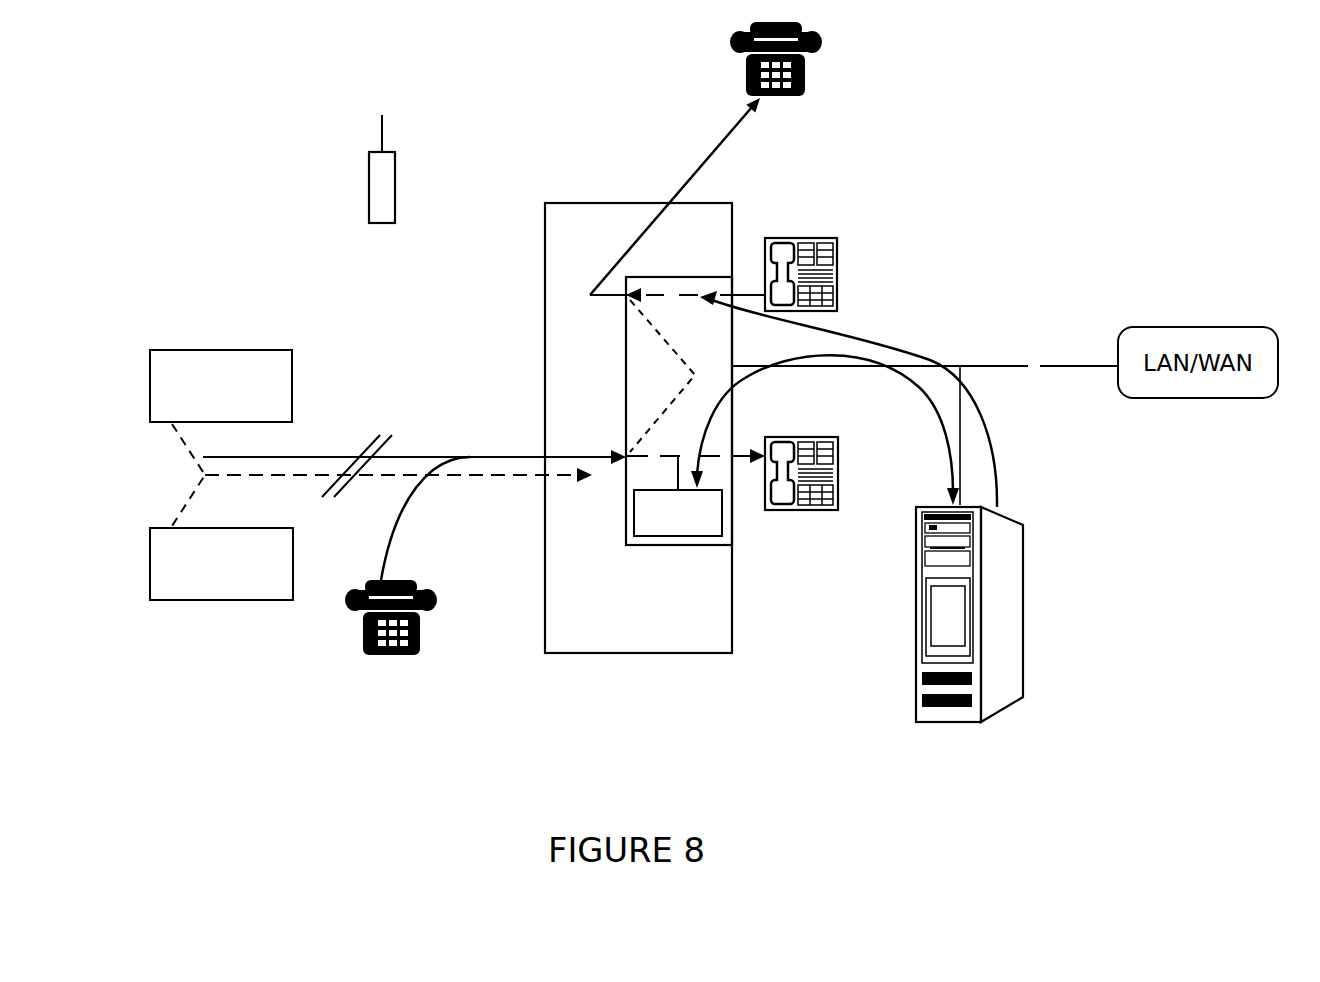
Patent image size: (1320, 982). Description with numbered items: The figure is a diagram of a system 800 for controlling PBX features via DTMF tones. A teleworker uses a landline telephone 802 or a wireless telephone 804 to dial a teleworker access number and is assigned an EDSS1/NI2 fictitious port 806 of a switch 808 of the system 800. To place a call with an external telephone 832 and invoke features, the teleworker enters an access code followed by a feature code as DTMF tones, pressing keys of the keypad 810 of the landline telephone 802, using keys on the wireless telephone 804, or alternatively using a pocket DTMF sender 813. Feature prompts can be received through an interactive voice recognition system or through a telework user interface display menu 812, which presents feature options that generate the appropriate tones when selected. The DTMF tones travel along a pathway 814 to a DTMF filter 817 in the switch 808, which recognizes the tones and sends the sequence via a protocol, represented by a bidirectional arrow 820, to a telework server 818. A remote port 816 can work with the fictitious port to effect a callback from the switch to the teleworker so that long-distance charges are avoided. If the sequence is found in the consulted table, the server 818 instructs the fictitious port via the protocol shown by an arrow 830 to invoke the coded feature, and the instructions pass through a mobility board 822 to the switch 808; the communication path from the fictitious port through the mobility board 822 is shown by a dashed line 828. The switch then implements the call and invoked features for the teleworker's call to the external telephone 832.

The system 800 is at (918, 221).
The landline telephone 802 is at (438, 600).
The wireless telephone 804 is at (397, 163).
The fictitious port 806 is at (742, 292).
The switch 808 is at (608, 379).
The keypad 810 is at (376, 637).
The telework user interface display menu 812 is at (240, 397).
The pocket DTMF sender 813 is at (237, 577).
The pathway 814 is at (503, 455).
The remote port 816 is at (713, 452).
The DTMF filter 817 is at (701, 531).
The telework server 818 is at (1014, 541).
The bidirectional arrow 820 is at (925, 405).
The mobility board 822 is at (713, 342).
The dashed line 828 is at (680, 293).
The arrow 830 is at (904, 340).
The external telephone 832 is at (806, 68).